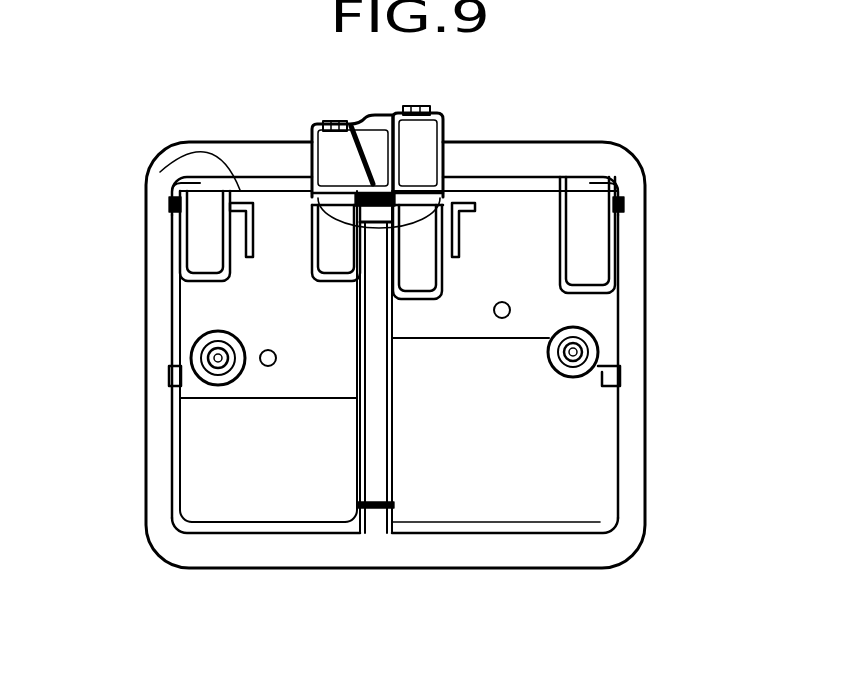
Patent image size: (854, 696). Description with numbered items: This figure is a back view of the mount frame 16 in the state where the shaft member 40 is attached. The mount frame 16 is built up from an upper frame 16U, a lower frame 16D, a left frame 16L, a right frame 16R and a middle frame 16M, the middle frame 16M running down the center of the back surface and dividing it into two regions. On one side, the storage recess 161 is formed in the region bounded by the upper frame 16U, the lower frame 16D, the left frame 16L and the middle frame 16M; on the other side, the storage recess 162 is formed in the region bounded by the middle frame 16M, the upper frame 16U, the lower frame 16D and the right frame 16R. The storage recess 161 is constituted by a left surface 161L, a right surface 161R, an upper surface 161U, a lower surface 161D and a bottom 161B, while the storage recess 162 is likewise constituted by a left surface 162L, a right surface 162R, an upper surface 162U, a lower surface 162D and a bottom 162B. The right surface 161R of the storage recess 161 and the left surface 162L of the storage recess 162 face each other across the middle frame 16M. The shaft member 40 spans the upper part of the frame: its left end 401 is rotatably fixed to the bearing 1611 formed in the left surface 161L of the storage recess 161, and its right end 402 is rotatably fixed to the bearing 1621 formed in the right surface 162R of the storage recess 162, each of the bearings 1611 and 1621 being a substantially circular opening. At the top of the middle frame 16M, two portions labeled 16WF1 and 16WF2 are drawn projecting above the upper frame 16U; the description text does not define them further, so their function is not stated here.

The mount frame 16 is at (187, 553).
The upper frame 16U is at (543, 160).
The lower frame 16D is at (273, 557).
The right frame 16R is at (150, 354).
The left frame 16L is at (637, 352).
The middle frame 16M is at (362, 512).
The first wire fixing portion 16WF1 is at (455, 90).
The second wire fixing portion 16WF2 is at (323, 123).
The storage recess 161 is at (583, 443).
The upper surface 161U is at (570, 177).
The lower surface 161D is at (540, 533).
The bottom 161B is at (513, 470).
The left surface 161L is at (620, 230).
The right surface 161R is at (447, 150).
The bearing 1611 is at (622, 197).
The storage recess 162 is at (210, 437).
The upper surface 162U is at (197, 152).
The lower surface 162D is at (202, 533).
The bottom 162B is at (215, 480).
The left surface 162L is at (307, 140).
The right surface 162R is at (175, 227).
The bearing 1621 is at (177, 188).
The shaft member 40 is at (165, 168).
The left end 401 is at (625, 208).
The right end 402 is at (168, 205).